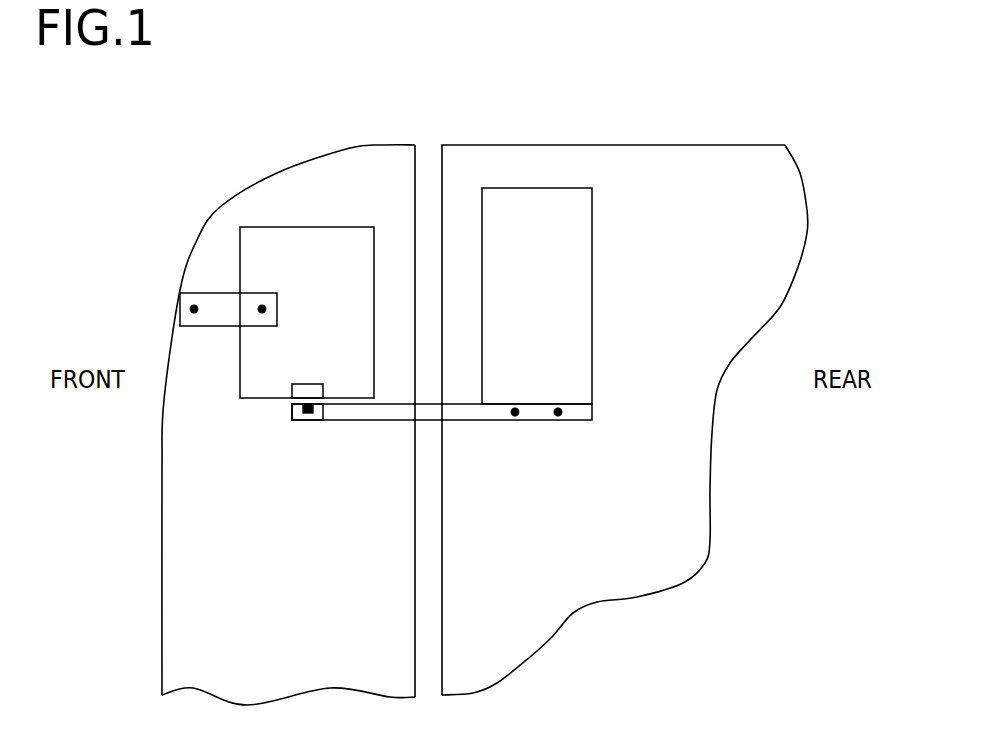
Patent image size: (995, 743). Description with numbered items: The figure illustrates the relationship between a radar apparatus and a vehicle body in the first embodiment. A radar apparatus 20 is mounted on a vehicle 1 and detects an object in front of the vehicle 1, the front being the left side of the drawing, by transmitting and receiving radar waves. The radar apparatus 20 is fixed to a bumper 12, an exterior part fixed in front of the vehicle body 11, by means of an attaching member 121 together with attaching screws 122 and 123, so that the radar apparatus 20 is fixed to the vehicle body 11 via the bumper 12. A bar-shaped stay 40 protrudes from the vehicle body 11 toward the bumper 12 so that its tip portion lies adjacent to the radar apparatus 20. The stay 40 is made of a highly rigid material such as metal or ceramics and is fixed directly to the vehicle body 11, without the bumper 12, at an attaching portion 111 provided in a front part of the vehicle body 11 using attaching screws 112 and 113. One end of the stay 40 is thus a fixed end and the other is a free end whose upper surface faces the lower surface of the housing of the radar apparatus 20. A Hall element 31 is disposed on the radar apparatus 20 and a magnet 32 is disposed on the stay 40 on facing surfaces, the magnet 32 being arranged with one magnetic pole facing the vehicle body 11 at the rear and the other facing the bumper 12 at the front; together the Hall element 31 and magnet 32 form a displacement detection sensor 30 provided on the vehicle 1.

The vehicle 1 is at (391, 115).
The vehicle body 11 is at (487, 145).
The bumper 12 is at (278, 173).
The radar apparatus 20 is at (285, 227).
The displacement detection sensor 30 is at (262, 387).
The Hall element 31 is at (309, 383).
The magnet 32 is at (309, 417).
The stay 40 is at (428, 404).
The attaching portion 111 is at (592, 248).
The attaching screw 112 is at (558, 413).
The attaching screw 113 is at (515, 413).
The attaching member 121 is at (222, 326).
The attaching screw 122 is at (262, 309).
The attaching screw 123 is at (194, 309).